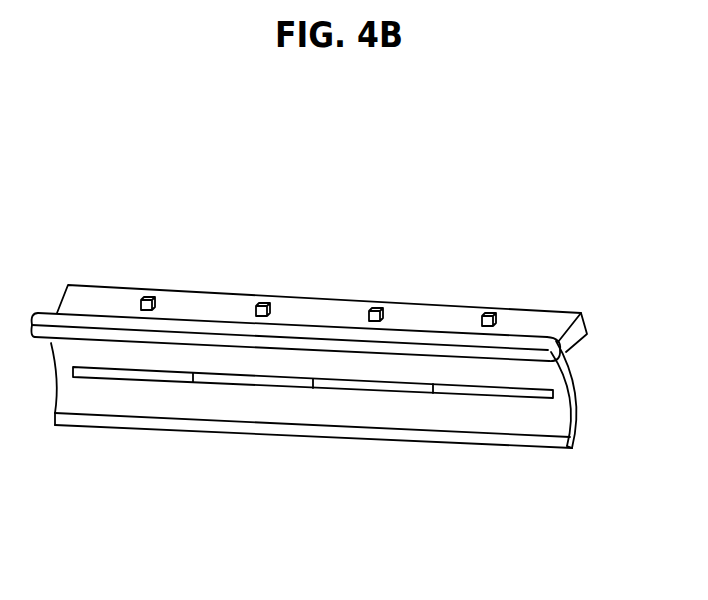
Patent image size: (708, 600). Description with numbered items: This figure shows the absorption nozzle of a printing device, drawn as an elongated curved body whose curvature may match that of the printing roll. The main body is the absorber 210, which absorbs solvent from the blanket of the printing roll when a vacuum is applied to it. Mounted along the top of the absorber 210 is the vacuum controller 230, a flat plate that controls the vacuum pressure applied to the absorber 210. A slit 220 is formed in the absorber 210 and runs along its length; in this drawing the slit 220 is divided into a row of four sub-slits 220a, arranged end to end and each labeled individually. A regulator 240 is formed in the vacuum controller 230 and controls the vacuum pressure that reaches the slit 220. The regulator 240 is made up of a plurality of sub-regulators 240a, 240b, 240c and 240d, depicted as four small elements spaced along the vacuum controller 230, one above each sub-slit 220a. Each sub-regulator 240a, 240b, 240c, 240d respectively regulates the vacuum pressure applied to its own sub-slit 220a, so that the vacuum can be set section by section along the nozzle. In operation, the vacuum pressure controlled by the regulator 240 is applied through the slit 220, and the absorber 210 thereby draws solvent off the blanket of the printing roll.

The absorber 210 is at (573, 415).
The vacuum controller 230 is at (578, 348).
The regulator 240 is at (334, 241).
The sub-regulator 240a is at (149, 297).
The sub-regulator 240b is at (263, 303).
The sub-regulator 240c is at (376, 308).
The sub-regulator 240d is at (502, 281).
The slit 220 is at (313, 465).
The sub-slit 220a is at (488, 493).